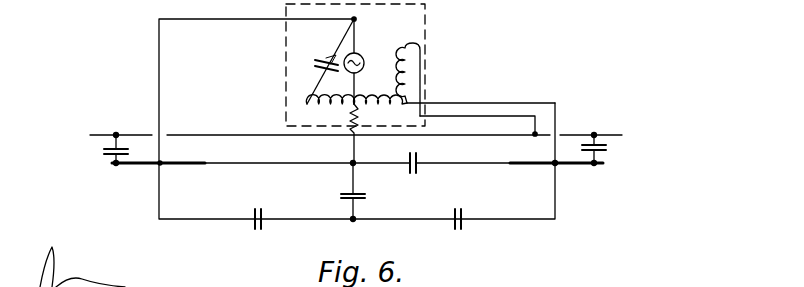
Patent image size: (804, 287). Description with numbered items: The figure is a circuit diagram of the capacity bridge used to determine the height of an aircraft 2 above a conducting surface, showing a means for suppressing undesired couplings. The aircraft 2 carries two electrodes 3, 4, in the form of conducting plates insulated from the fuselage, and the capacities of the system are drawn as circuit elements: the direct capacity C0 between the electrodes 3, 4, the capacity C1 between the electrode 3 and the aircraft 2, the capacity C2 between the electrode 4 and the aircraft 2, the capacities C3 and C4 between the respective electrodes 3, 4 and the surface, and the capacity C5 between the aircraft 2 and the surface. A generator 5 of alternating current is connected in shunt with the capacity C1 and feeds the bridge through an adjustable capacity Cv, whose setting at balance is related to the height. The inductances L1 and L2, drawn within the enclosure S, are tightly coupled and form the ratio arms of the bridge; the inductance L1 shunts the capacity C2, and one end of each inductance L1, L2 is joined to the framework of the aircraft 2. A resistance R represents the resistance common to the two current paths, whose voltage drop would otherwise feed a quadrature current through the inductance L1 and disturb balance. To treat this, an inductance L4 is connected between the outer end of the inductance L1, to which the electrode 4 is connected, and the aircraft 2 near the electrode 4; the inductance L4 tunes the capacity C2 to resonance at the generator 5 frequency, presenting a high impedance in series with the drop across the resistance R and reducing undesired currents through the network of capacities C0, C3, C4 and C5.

The oscillator unit (dashed enclosure) S is at (428, 22).
The generator of alternating current 5 is at (367, 58).
The adjustable capacity Cv is at (313, 64).
The inductance L2 is at (305, 117).
The inductance L1 is at (415, 97).
The inductance L4 is at (414, 65).
The resistance R is at (351, 134).
The aircraft 2 is at (598, 125).
The electrode 3 is at (143, 168).
The electrode 4 is at (582, 170).
The capacity between electrode 3 and the aircraft C1 is at (98, 153).
The capacity between electrode 4 and the aircraft C2 is at (608, 150).
The capacity between aircraft and the surface C5 is at (333, 193).
The direct capacity between electrodes C0 is at (422, 170).
The capacity between electrode 3 and the surface C3 is at (258, 238).
The capacity between electrode 4 and the surface C4 is at (467, 227).